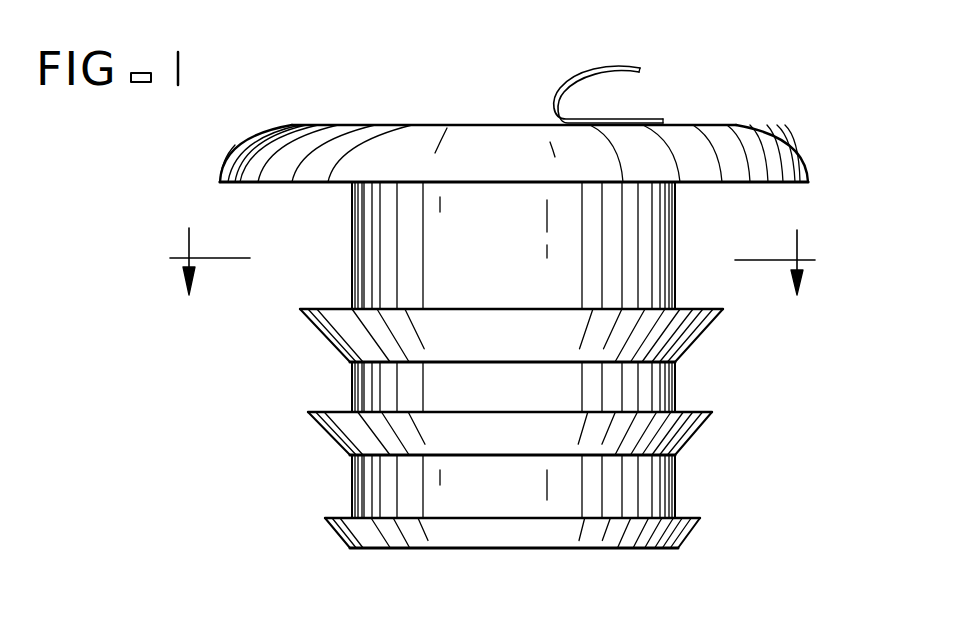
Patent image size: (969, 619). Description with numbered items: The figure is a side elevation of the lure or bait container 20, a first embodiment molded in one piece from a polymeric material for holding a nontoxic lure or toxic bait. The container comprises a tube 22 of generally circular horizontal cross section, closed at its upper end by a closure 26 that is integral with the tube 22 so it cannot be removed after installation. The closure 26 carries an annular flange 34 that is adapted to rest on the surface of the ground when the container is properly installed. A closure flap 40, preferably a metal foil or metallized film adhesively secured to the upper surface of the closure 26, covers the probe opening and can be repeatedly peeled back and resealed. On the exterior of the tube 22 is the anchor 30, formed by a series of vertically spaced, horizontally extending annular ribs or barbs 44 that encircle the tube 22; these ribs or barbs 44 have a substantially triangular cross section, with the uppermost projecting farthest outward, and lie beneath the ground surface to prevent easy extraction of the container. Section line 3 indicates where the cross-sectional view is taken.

The lure or bait container 20 is at (788, 115).
The tube 22 is at (340, 222).
The closure 26 is at (328, 114).
The anchor 30 is at (762, 377).
The annular flange 34 is at (236, 183).
The closure flap 40 is at (641, 70).
The annular ribs or barbs 44 is at (318, 330).
The section line 3- 3 is at (495, 259).